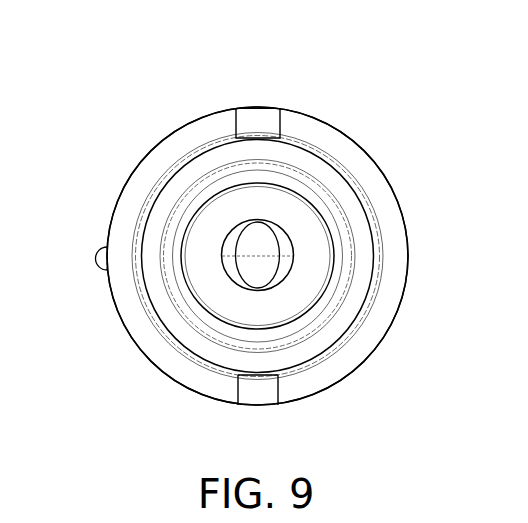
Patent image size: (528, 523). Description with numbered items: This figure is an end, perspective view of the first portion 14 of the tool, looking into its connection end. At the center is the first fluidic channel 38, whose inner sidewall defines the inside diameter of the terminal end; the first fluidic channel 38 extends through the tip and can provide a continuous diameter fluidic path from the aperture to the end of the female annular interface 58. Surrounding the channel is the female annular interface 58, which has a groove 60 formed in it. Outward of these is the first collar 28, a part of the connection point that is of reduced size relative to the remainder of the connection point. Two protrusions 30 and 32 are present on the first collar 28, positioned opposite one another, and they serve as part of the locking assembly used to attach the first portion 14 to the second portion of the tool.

The first portion 14 is at (331, 106).
The first collar 28 is at (139, 161).
The protrusion 30 is at (258, 107).
The protrusion 32 is at (262, 406).
The first fluidic channel 38 is at (261, 265).
The female annular interface 58 is at (338, 262).
The groove 60 is at (197, 188).